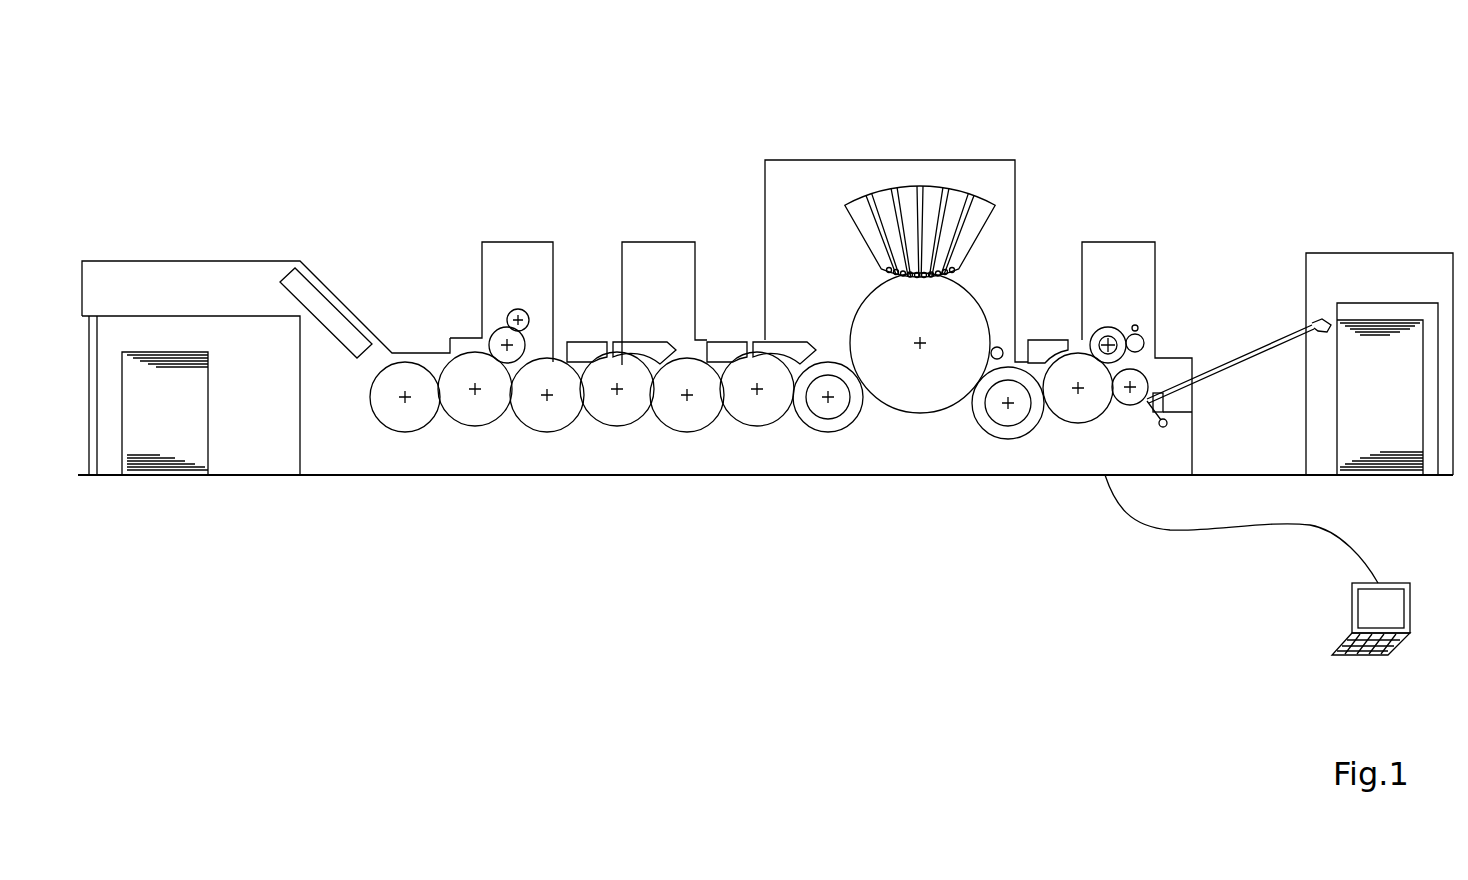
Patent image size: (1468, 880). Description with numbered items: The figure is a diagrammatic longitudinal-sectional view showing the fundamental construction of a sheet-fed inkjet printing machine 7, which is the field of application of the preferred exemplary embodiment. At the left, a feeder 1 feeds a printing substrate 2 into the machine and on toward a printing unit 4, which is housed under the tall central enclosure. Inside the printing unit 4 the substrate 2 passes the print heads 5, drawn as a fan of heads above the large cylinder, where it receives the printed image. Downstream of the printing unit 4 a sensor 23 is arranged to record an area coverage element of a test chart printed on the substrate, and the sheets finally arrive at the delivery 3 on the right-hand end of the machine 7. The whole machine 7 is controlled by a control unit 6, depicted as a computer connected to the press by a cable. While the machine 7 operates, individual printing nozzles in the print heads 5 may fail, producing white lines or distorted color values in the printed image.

The feeder 1 is at (202, 288).
The printing substrate 2 is at (973, 293).
The delivery 3 is at (1390, 318).
The printing unit 4 is at (833, 157).
The print heads 5 is at (919, 185).
The control unit 6 is at (1350, 612).
The inkjet printing machine 7 is at (1240, 77).
The sensor 23 is at (1042, 347).